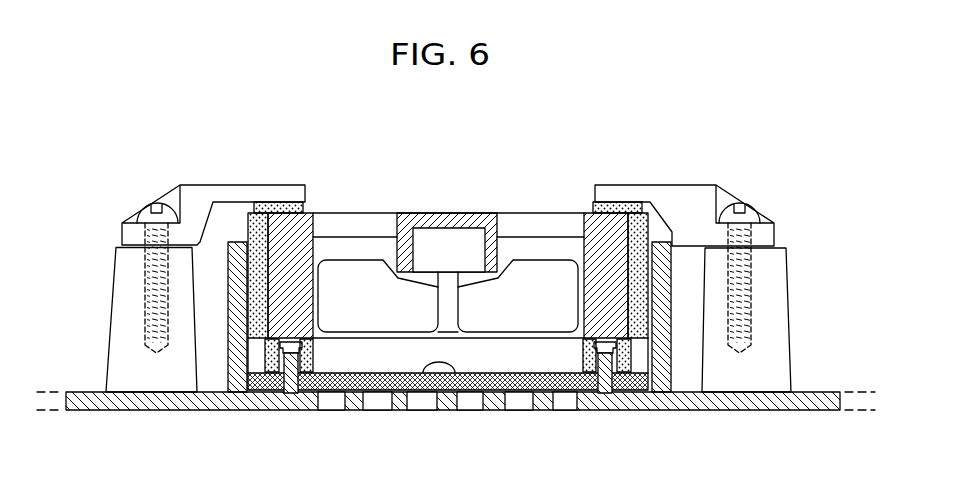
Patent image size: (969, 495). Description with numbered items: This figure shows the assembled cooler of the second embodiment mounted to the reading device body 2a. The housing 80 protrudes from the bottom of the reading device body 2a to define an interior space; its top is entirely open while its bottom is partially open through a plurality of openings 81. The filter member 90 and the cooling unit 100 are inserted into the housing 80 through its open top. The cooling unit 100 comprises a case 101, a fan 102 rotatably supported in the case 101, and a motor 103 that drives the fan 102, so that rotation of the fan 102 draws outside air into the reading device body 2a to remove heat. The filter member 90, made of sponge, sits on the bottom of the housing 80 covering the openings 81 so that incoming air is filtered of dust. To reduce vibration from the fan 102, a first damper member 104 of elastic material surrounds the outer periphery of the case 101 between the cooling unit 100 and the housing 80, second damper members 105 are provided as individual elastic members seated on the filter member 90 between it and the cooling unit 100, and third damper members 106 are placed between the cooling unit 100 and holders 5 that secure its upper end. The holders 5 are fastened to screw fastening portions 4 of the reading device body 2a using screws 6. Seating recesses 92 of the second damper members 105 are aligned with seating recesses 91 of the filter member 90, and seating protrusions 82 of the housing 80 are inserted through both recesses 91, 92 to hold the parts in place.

The cooling unit 100 is at (454, 248).
The case 101 is at (316, 224).
The fan 102 is at (540, 270).
The motor 103 is at (448, 237).
The first damper member 104 is at (656, 205).
The second damper members 105 is at (586, 356).
The third damper members 106 is at (600, 213).
The holders 5 is at (669, 190).
The screws 6 is at (748, 207).
The screw fastening portions 4 is at (786, 292).
The reading device body 2a is at (815, 393).
The housing 80 is at (229, 360).
The openings 81 is at (371, 413).
The seating protrusions 82 is at (277, 362).
The filter member 90 is at (425, 375).
The seating recesses 91 is at (608, 368).
The seating recesses 92 is at (633, 379).